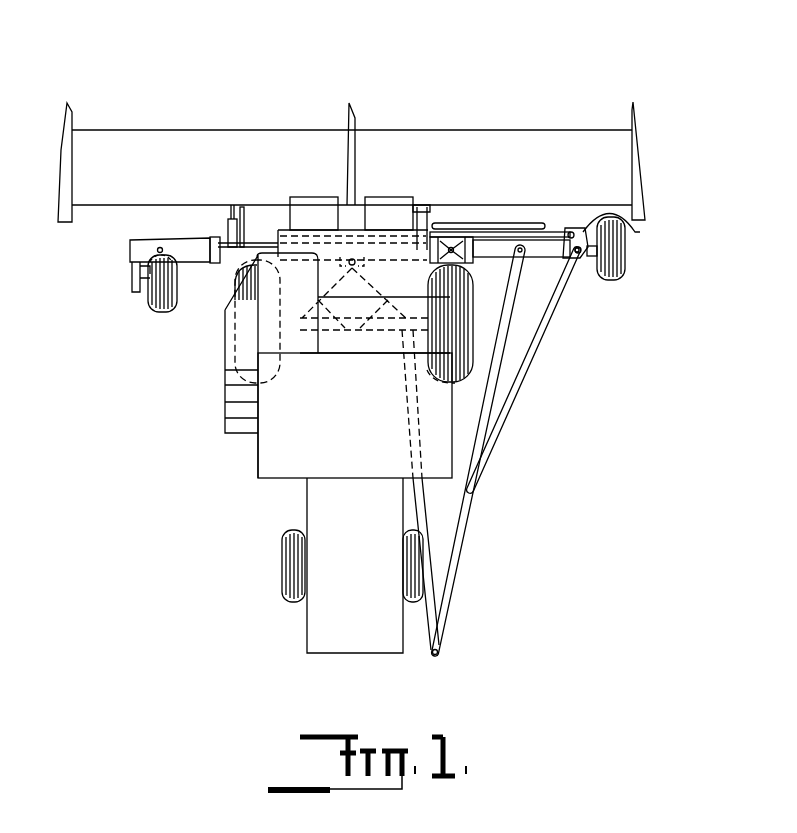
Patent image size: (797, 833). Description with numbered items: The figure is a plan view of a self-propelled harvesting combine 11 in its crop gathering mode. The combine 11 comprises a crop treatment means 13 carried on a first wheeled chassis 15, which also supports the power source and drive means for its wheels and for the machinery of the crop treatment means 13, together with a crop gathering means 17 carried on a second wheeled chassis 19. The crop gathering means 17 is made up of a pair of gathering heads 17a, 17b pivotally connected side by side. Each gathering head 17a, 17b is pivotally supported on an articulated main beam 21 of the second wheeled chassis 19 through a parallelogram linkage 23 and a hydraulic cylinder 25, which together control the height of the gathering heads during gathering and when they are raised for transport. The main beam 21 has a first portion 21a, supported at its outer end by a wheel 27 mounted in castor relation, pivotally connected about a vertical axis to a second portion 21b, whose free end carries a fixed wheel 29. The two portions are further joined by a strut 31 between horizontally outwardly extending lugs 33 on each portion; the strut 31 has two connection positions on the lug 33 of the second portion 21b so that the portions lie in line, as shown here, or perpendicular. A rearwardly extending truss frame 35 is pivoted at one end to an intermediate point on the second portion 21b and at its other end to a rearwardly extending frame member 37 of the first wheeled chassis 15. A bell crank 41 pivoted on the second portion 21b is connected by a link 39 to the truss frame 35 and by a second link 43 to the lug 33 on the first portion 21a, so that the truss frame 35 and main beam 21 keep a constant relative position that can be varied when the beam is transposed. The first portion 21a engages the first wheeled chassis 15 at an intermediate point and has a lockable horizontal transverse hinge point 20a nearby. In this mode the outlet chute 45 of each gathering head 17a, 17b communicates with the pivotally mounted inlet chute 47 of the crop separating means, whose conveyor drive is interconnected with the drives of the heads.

The combine 11 is at (215, 524).
The crop treatment means 13 is at (297, 468).
The first wheeled chassis 15 is at (297, 330).
The crop gathering means 17 is at (330, 63).
The gathering head 17a is at (143, 143).
The gathering head 17b is at (549, 130).
The second wheeled chassis 19 is at (207, 282).
The transverse hinge point 20a is at (352, 247).
The articulated main beam 21 is at (437, 263).
The first portion of the main beam 21a is at (215, 232).
The second portion of the main beam 21b is at (553, 263).
The parallelogram linkage 23 is at (246, 212).
The hydraulic cylinder 25 is at (227, 225).
The wheel 27 is at (152, 312).
The fixed wheel 29 is at (620, 262).
The strut 31 is at (515, 232).
The lug 33 is at (432, 222).
The truss frame 35 is at (557, 222).
The frame member 37 is at (415, 625).
The link 39 is at (518, 385).
The bell crank 41 is at (625, 228).
The second link 43 is at (527, 225).
The outlet chute 45 is at (390, 203).
The inlet chute 47 is at (347, 232).